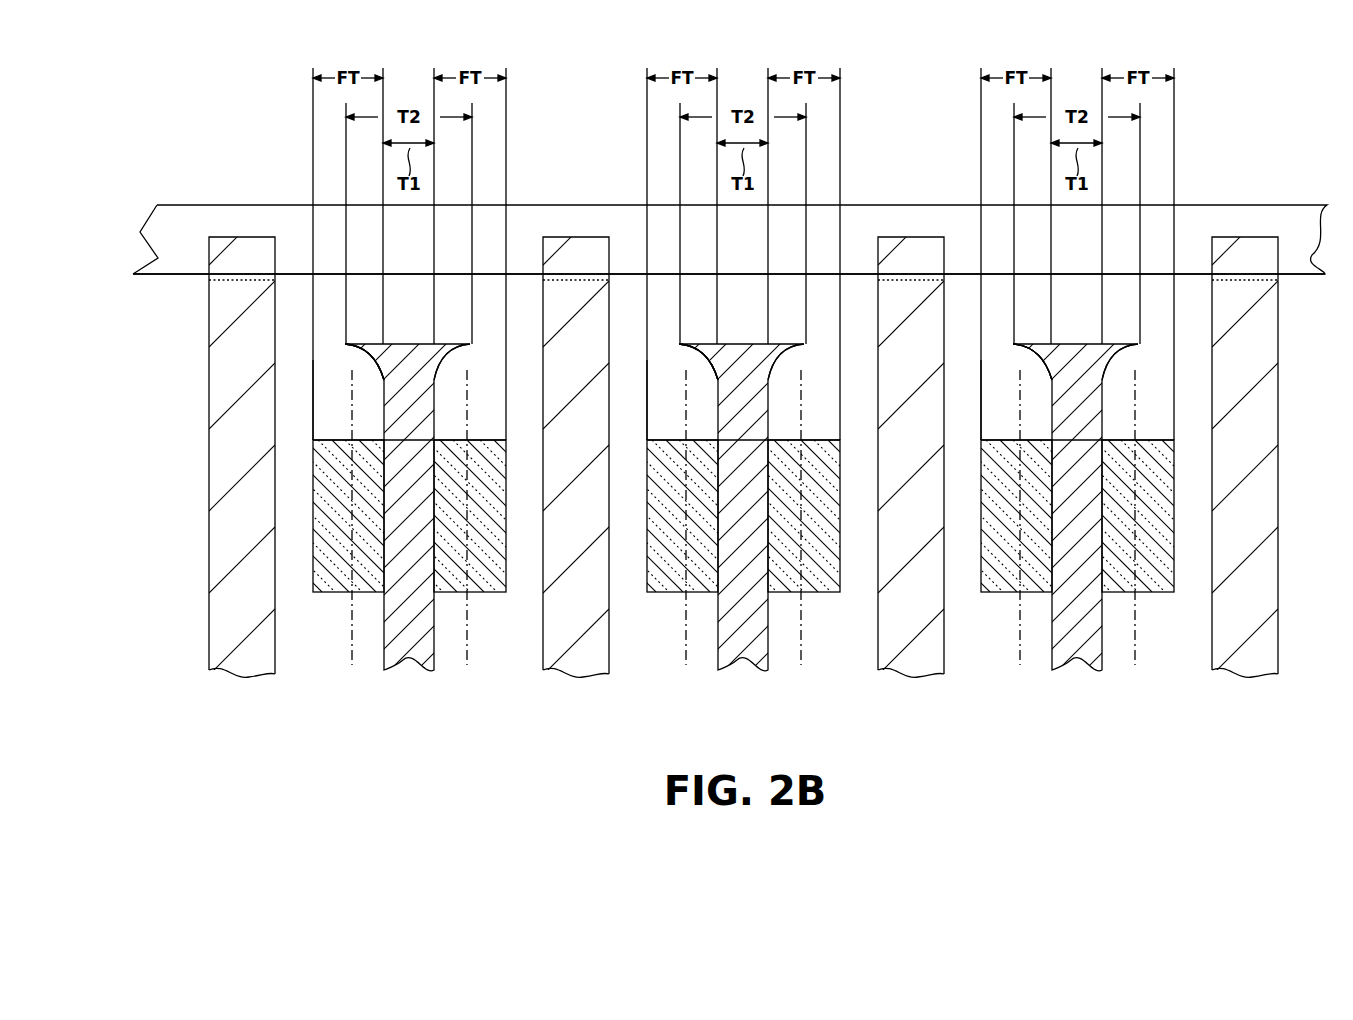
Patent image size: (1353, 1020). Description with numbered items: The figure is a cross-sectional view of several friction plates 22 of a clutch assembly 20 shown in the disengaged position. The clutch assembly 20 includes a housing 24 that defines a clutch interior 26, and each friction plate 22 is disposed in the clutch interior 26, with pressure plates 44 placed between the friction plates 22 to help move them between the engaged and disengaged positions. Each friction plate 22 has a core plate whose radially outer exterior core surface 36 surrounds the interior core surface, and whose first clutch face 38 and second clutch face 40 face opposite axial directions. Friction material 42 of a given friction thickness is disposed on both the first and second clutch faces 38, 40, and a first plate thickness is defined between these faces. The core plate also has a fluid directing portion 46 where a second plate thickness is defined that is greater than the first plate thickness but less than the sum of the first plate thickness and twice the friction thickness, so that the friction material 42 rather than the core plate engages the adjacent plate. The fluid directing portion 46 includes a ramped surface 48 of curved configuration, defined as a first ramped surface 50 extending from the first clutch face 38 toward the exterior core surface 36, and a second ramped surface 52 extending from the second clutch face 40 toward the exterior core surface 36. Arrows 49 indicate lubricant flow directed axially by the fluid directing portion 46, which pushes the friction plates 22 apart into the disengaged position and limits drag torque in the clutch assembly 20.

The clutch assembly 20 is at (114, 191).
The friction plate 22 is at (714, 545).
The housing 24 is at (730, 198).
The clutch interior 26 is at (729, 205).
The exterior core surface 36 is at (691, 480).
The first clutch face 38 is at (706, 558).
The second clutch face 40 is at (774, 552).
The friction material 42 is at (742, 546).
The pressure plates 44 is at (743, 465).
The fluid directing portion 46 is at (685, 386).
The ramped surface 48 is at (585, 384).
The arrows 49 is at (749, 273).
The first ramped surface 50 is at (585, 384).
The second ramped surface 52 is at (802, 371).